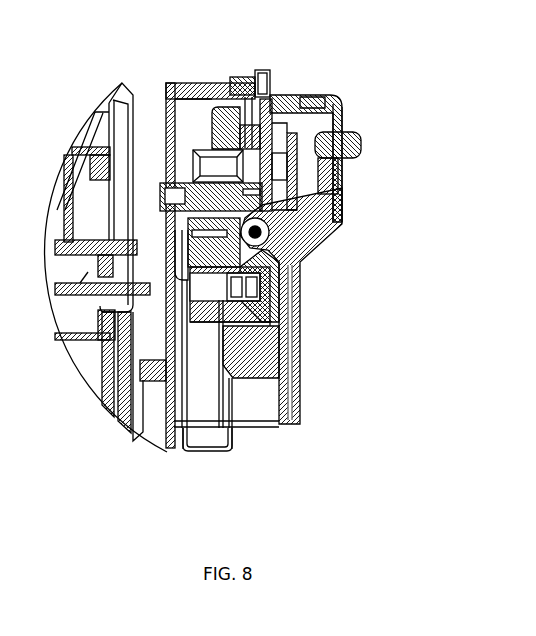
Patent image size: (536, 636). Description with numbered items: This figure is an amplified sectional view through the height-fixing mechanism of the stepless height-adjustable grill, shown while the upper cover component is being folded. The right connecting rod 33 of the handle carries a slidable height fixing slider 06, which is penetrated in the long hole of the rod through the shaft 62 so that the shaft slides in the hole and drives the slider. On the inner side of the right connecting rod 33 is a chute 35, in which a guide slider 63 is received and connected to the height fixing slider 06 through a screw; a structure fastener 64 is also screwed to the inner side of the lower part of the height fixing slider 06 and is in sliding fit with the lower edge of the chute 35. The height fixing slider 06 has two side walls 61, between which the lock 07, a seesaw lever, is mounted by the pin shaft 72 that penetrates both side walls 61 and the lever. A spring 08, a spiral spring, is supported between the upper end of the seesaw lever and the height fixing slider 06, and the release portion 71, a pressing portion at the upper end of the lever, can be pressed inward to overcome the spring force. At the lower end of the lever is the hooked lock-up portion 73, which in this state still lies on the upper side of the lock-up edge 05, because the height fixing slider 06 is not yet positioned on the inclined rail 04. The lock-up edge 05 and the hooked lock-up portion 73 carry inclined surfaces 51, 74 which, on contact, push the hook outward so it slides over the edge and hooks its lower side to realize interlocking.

The inclined rail 04 is at (193, 442).
The lock-up edge 05 is at (228, 448).
The height fixing slider 06 is at (331, 30).
The lock 07 is at (298, 257).
The spring 08 is at (321, 187).
The right connecting rod 33 is at (247, 97).
The chute 35 is at (200, 107).
The inclined surface 51 is at (235, 432).
The side wall 61 is at (340, 118).
The shaft 62 is at (311, 97).
The guide slider 63 is at (203, 151).
The structure fastener 64 is at (172, 205).
The release portion 71 is at (356, 152).
The pin shaft 72 is at (270, 231).
The lock-up portion 73 is at (301, 335).
The inclined surface 74 is at (250, 370).